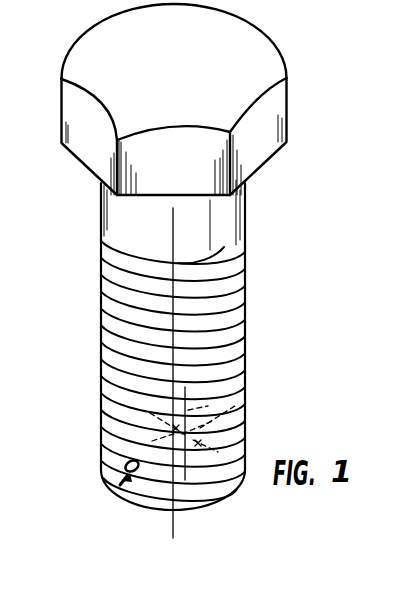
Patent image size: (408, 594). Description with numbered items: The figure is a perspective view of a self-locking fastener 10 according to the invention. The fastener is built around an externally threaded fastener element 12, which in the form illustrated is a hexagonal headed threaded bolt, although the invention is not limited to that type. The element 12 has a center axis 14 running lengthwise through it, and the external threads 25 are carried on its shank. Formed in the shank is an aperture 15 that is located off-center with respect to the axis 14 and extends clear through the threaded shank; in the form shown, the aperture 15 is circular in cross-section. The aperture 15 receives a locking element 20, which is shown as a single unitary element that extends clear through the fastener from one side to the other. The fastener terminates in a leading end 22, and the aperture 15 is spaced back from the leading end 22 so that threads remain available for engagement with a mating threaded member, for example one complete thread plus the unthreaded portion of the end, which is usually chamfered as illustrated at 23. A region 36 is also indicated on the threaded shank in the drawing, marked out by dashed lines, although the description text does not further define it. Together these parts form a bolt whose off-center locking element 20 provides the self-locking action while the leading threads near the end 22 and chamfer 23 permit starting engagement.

The self-locking fastener 10 is at (187, 288).
The center axis 14 is at (173, 227).
The externally threaded fastener element 12 is at (178, 359).
The threads 25 is at (114, 316).
The locking patch area 36 is at (187, 433).
The locking element 20 is at (124, 466).
The aperture 15 is at (125, 482).
The leading end 22 is at (203, 493).
The chamfered unthreaded end portion 23 is at (190, 508).